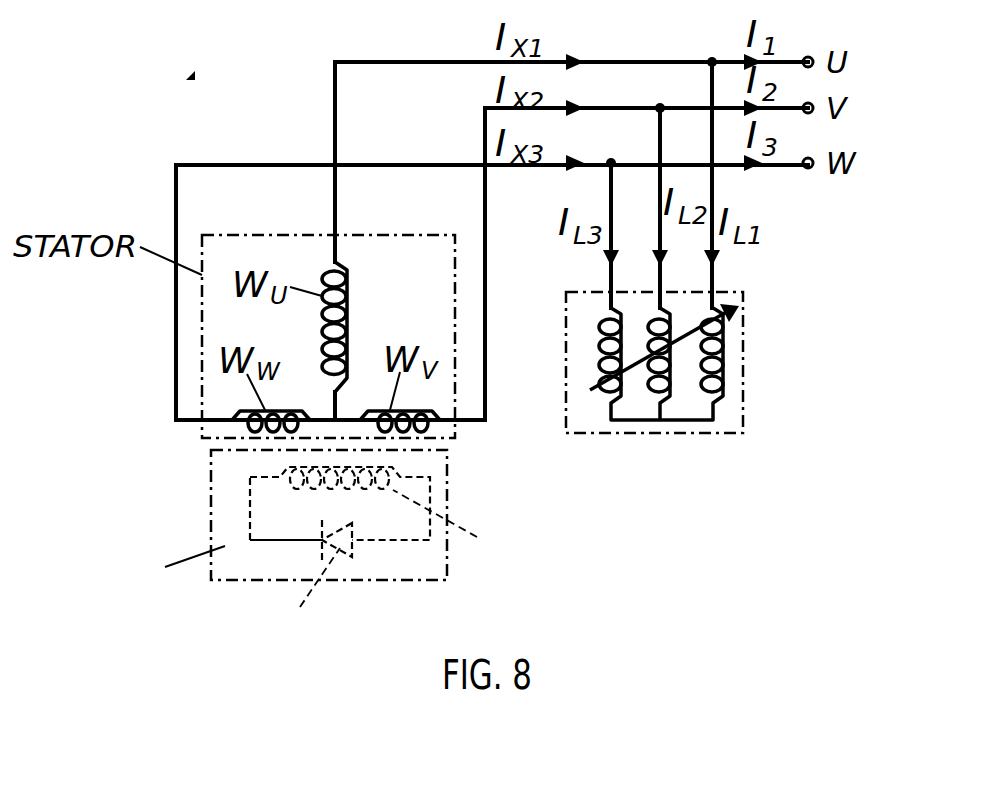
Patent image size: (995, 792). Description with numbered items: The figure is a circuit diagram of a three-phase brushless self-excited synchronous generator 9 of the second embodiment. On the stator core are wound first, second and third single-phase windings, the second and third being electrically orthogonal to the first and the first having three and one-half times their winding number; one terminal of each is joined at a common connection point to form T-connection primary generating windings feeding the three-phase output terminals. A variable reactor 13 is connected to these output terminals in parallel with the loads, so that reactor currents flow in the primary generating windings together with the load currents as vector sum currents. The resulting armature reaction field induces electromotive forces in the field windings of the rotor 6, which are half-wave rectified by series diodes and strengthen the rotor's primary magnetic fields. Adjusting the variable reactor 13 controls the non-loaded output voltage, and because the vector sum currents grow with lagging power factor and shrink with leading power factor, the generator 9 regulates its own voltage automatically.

The generator 9 is at (192, 77).
The rotor 6 is at (205, 508).
The variable reactor 13 is at (748, 363).